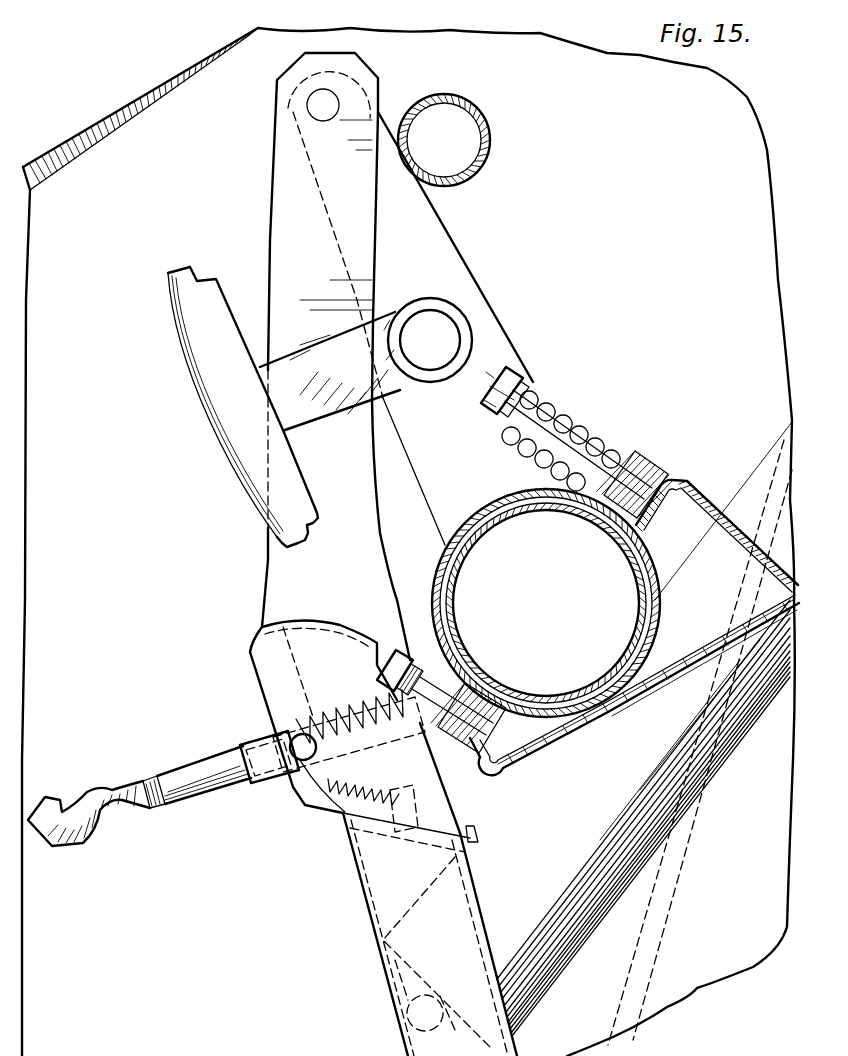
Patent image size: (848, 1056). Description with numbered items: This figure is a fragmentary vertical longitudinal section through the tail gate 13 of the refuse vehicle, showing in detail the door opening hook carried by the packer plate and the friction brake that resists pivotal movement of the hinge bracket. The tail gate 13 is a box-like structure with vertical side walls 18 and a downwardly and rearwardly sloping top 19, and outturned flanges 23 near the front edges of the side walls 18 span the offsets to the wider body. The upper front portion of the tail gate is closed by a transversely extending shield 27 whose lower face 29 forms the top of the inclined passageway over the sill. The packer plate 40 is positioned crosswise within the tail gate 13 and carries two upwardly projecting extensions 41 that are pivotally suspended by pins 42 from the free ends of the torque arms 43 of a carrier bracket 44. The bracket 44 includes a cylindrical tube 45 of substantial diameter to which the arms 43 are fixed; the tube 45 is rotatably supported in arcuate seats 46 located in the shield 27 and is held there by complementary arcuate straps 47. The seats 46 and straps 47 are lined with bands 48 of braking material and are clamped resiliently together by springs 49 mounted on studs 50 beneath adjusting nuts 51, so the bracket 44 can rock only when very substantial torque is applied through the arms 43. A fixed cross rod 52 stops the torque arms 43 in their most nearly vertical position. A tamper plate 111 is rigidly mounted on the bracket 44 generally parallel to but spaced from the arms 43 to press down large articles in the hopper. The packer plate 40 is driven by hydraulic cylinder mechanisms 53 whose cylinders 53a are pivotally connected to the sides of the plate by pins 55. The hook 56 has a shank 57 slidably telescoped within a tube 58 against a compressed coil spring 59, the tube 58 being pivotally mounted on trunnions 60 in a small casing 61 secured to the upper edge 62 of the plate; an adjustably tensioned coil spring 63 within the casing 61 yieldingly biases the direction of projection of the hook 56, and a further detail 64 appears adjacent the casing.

The tail gate 13 is at (62, 140).
The side walls 18 is at (150, 592).
The top 19 is at (123, 90).
The outturned flanges 23 is at (663, 905).
The shield 27 is at (720, 526).
The lower face 29 is at (662, 684).
The packer plate 40 is at (414, 934).
The upwardly projecting extensions 41 is at (305, 340).
The pins 42 is at (323, 108).
The torque arms 43 is at (478, 326).
The carrier bracket 44 is at (430, 510).
The cylindrical tube 45 is at (462, 577).
The arcuate seats 46 is at (658, 606).
The arcuate straps 47 is at (570, 587).
The bands of braking material 48 is at (455, 623).
The springs 49 is at (570, 410).
The studs 50 is at (612, 436).
The adjusting nuts 51 is at (521, 380).
The cross rod 52 is at (491, 140).
The hydraulic cylinder mechanisms 53 is at (730, 770).
The cylinders 53a is at (545, 988).
The pins 55 is at (422, 1013).
The hook 56 is at (47, 803).
The shank 57 is at (190, 773).
The tube 58 is at (262, 742).
The compressed coil spring 59 is at (343, 718).
The trunnions 60 is at (300, 733).
The casing 61 is at (353, 724).
The upper edge 62 is at (418, 836).
The adjustably tensioned coil spring 63 is at (345, 820).
The guide slot 64 is at (300, 790).
The tamper plate 111 is at (205, 378).